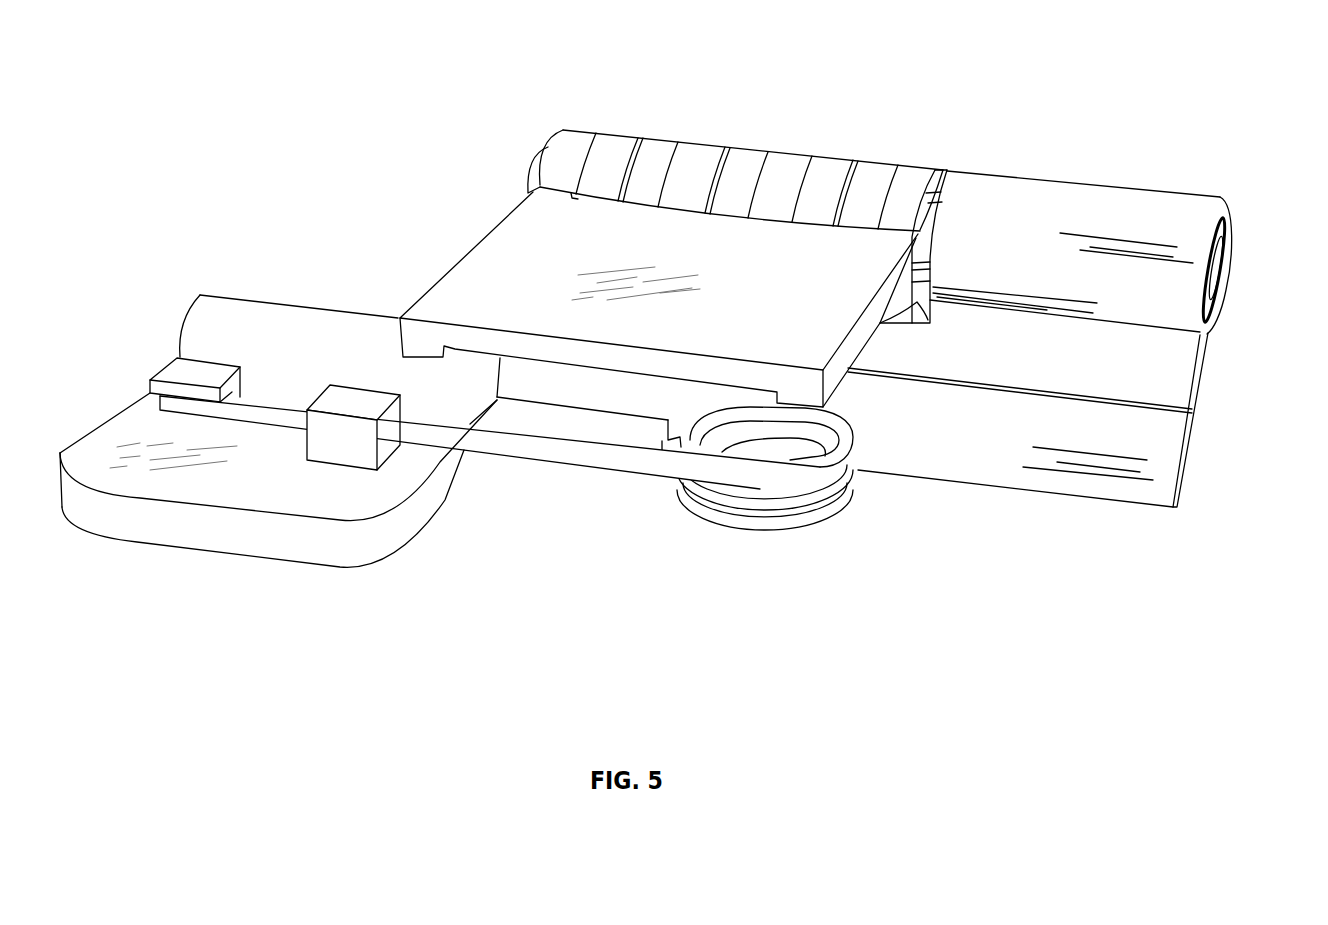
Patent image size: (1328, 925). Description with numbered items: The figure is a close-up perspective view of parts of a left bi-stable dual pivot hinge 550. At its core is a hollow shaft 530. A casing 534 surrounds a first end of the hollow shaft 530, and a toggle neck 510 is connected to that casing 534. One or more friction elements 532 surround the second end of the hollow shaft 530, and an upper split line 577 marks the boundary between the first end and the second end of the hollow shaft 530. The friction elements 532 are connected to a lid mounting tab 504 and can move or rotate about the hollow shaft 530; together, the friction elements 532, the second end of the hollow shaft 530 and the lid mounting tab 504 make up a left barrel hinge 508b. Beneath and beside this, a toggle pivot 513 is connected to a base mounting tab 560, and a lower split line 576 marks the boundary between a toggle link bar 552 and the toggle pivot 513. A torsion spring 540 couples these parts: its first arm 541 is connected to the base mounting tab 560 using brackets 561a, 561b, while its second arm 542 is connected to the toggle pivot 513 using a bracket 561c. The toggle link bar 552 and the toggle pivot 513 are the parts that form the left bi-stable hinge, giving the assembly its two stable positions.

The left bi-stable dual pivot hinge 550 is at (370, 136).
The left barrel hinge 508b is at (595, 90).
The friction elements 532 is at (790, 155).
The lid mounting tab 504 is at (507, 239).
The lower split line 576 is at (497, 370).
The bracket 561c is at (603, 432).
The second arm 542 is at (675, 438).
The upper split line 577 is at (940, 180).
The casing 534 is at (1090, 189).
The hollow shaft 530 is at (1225, 228).
The toggle neck 510 is at (1153, 370).
The toggle pivot 513 is at (1149, 500).
The toggle link bar 552 is at (208, 305).
The bracket 561a is at (175, 365).
The bracket 561b is at (375, 453).
The first arm 541 is at (537, 452).
The torsion spring 540 is at (838, 511).
The base mounting tab 560 is at (164, 540).